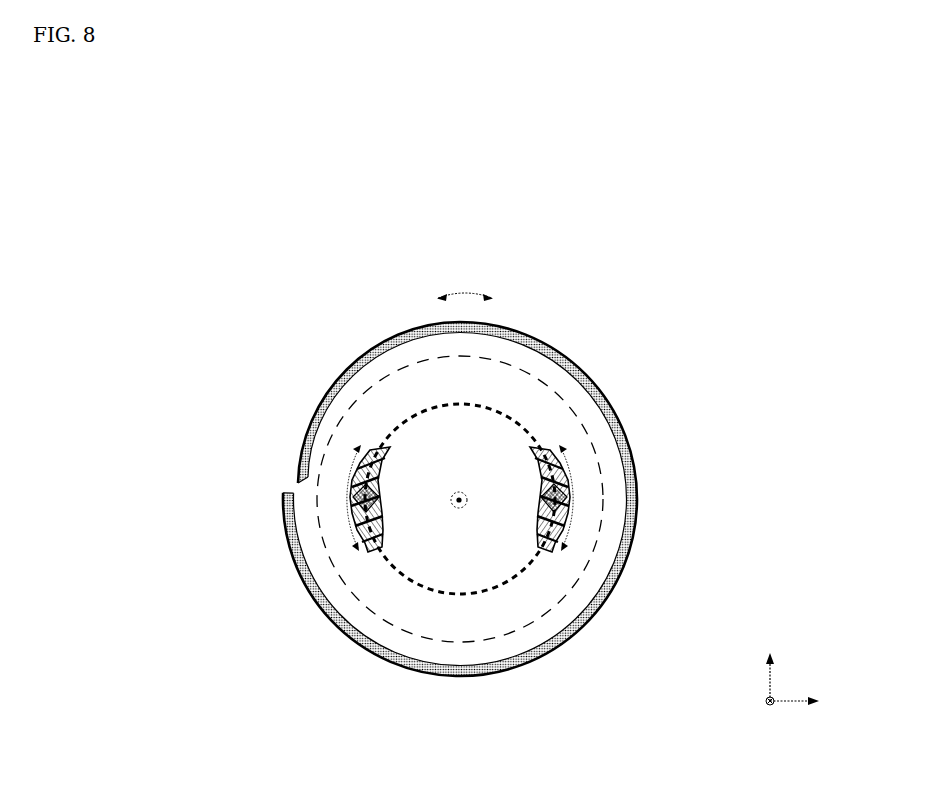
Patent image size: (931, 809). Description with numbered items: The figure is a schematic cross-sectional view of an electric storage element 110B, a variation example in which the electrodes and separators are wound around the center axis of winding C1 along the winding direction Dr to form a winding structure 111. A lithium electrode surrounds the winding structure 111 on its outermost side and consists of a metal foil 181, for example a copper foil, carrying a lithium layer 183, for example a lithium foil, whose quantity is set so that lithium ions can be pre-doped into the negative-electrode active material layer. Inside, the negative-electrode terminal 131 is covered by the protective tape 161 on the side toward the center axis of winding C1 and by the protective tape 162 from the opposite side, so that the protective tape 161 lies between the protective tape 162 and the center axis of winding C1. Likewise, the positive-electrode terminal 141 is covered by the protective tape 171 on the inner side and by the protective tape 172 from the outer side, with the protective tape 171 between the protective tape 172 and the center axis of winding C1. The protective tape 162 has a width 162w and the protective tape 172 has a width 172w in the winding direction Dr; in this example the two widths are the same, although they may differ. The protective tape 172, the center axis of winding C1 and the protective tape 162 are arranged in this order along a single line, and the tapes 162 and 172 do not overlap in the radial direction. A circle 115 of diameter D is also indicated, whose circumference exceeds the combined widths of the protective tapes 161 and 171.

The electric storage element 110B is at (617, 360).
The metal foil 181 is at (459, 459).
The lithium layer 183 is at (395, 352).
The winding structure 111 is at (594, 557).
The circle 115 is at (487, 592).
The center axis of winding C1 is at (457, 508).
The protective tape 171 is at (368, 553).
The protective tape 161 is at (548, 443).
The positive-electrode terminal 141 is at (286, 466).
The protective tape 172 is at (374, 446).
The width of protective tape 172 172w is at (350, 496).
The negative-electrode terminal 131 is at (615, 576).
The protective tape 162 is at (541, 556).
The width of protective tape 162 162w is at (562, 526).
The winding direction Dr is at (465, 286).